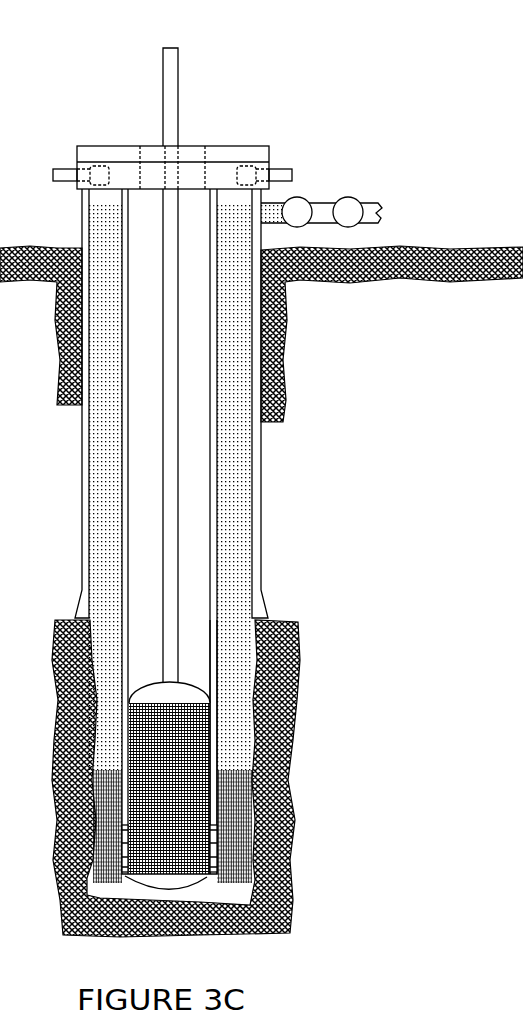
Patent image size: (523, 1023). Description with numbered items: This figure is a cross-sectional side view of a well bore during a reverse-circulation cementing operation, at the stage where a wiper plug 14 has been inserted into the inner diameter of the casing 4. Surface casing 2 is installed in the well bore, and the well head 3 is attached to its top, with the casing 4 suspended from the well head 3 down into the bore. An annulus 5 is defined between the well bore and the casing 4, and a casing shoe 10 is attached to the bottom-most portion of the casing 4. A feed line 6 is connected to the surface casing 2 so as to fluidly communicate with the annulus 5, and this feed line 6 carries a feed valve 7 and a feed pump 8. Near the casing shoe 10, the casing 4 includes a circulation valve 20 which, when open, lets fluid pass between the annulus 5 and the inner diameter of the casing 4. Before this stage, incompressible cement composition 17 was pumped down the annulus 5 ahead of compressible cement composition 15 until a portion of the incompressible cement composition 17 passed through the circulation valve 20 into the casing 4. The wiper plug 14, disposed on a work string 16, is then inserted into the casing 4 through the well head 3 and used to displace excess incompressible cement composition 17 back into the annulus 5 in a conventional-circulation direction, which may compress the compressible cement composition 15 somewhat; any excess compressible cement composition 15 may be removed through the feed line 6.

The surface casing 2 is at (257, 538).
The well head 3 is at (268, 146).
The casing 4 is at (217, 660).
The annulus 5 is at (236, 395).
The feed line 6 is at (327, 213).
The feed valve 7 is at (297, 206).
The feed pump 8 is at (348, 210).
The casing shoe 10 is at (202, 878).
The wiper plug 14 is at (192, 693).
The compressible cement composition 15 is at (236, 290).
The work string 16 is at (178, 98).
The incompressible cement composition 17 is at (190, 757).
The circulation valve 20 is at (218, 842).